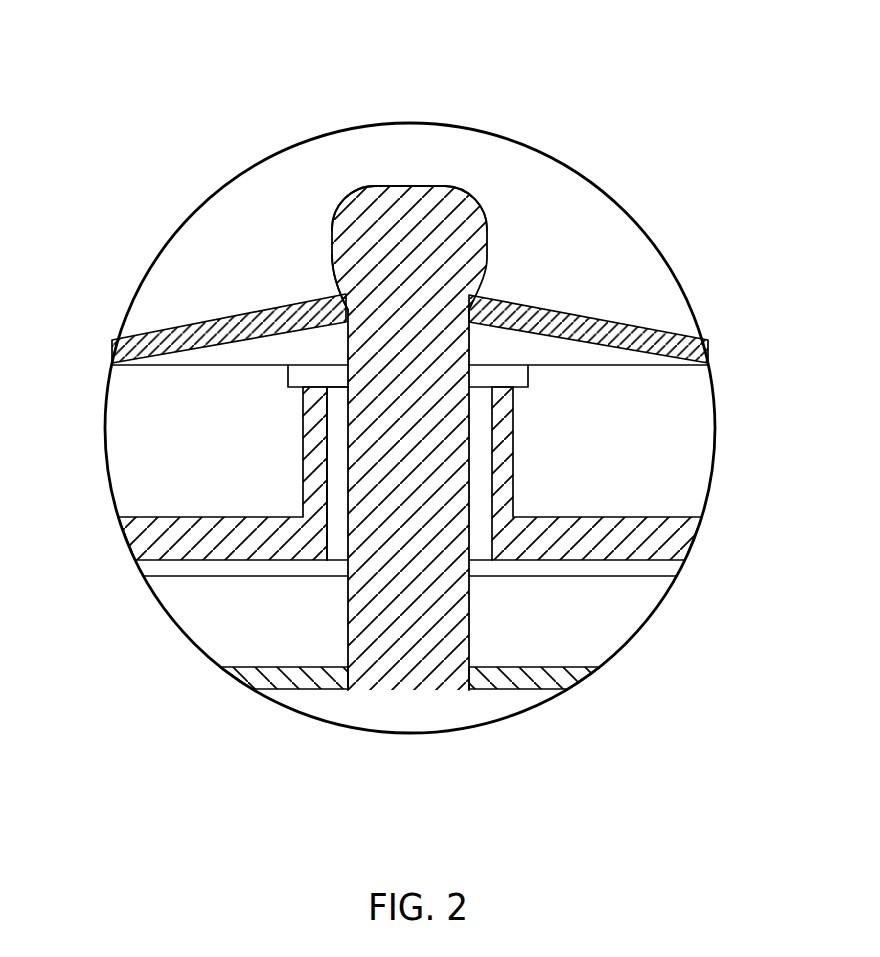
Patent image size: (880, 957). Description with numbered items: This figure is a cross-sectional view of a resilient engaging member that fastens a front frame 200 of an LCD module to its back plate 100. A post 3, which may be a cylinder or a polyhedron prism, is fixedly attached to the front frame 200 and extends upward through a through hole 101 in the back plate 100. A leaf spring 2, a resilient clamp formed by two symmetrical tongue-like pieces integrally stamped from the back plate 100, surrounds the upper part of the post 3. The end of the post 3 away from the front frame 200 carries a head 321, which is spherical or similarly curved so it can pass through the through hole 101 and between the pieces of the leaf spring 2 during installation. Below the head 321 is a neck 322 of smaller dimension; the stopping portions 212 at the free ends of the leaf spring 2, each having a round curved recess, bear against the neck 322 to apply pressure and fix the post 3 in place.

The leaf spring 2 is at (178, 326).
The post 3 is at (427, 203).
The back plate 100 is at (555, 347).
The through hole 101 is at (342, 490).
The front frame 200 is at (275, 673).
The stopping portion 212 is at (500, 297).
The head 321 is at (365, 212).
The neck 322 is at (341, 284).